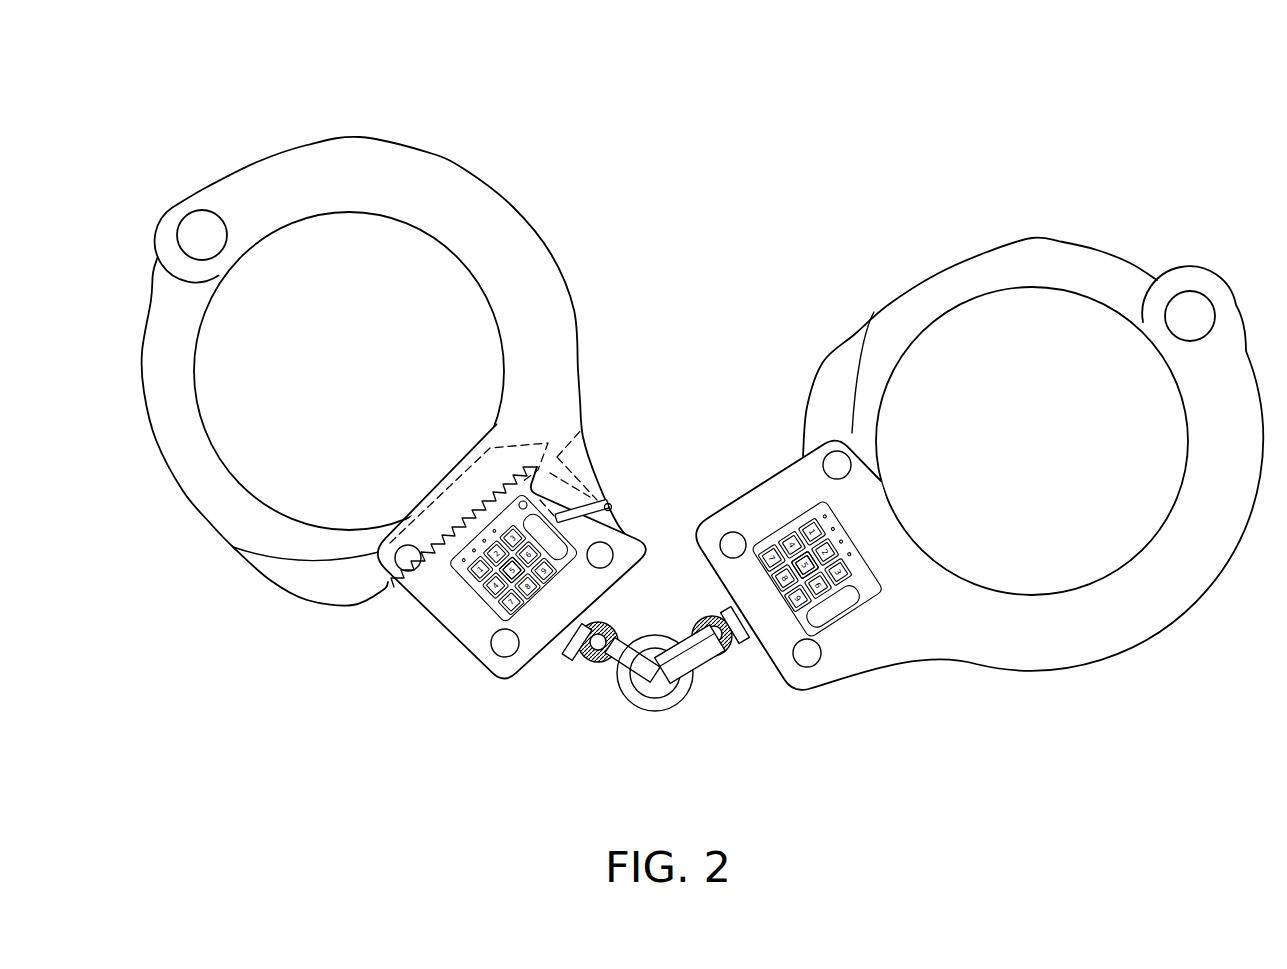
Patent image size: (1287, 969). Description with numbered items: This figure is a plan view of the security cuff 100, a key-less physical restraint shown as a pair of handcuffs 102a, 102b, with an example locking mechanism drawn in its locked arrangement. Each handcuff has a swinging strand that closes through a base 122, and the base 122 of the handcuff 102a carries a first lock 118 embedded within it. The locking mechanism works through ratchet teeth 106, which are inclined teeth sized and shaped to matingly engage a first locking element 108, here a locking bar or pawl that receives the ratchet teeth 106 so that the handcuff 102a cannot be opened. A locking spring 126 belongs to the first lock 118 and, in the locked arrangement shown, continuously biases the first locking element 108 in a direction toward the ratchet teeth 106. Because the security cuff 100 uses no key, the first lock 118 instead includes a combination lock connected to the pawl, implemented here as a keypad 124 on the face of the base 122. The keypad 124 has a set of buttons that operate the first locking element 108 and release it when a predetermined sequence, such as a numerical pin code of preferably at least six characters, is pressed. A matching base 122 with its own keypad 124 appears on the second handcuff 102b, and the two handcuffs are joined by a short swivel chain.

The security cuff 100 is at (702, 409).
The handcuff 102a is at (422, 417).
The handcuff 102b is at (1063, 216).
The ratchet teeth 106 is at (522, 467).
The first locking element 108 is at (553, 493).
The first lock 118 is at (432, 592).
The base 122 is at (504, 687).
The keypad 124 is at (532, 592).
The locking spring 126 is at (600, 524).